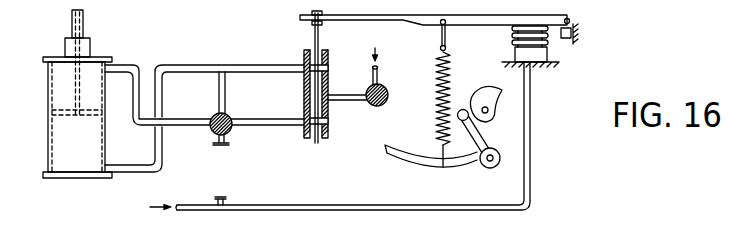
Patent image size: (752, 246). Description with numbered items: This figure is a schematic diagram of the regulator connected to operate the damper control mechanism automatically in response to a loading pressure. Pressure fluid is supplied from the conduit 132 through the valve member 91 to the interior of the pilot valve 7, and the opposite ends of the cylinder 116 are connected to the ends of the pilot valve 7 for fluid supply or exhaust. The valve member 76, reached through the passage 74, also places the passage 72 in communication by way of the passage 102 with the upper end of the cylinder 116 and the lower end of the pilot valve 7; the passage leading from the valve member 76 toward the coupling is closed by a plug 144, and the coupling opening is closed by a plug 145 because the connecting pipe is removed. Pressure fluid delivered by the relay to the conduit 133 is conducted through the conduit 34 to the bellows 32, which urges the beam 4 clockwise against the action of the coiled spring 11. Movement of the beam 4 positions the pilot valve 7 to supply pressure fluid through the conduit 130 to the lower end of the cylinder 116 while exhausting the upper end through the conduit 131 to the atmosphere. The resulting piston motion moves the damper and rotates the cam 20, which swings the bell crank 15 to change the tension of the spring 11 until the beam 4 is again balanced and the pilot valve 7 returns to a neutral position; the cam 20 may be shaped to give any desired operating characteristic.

The cylinder 116 is at (48, 128).
The conduit 131 is at (128, 65).
The conduit 130 is at (146, 165).
The passage 72 is at (244, 65).
The passage 74 is at (289, 119).
The passage 102 is at (218, 90).
The valve member 76 is at (228, 136).
The plug 144 is at (218, 146).
The pilot valve 7 is at (303, 51).
The beam 4 is at (463, 26).
The coiled spring 11 is at (450, 82).
The bell crank 15 is at (420, 168).
The cam 20 is at (497, 97).
The bellows 32 is at (548, 42).
The conduit 34 is at (335, 211).
The conduit 133 is at (197, 212).
The plug 145 is at (225, 197).
The valve member 91 is at (372, 108).
The conduit 132 is at (378, 70).